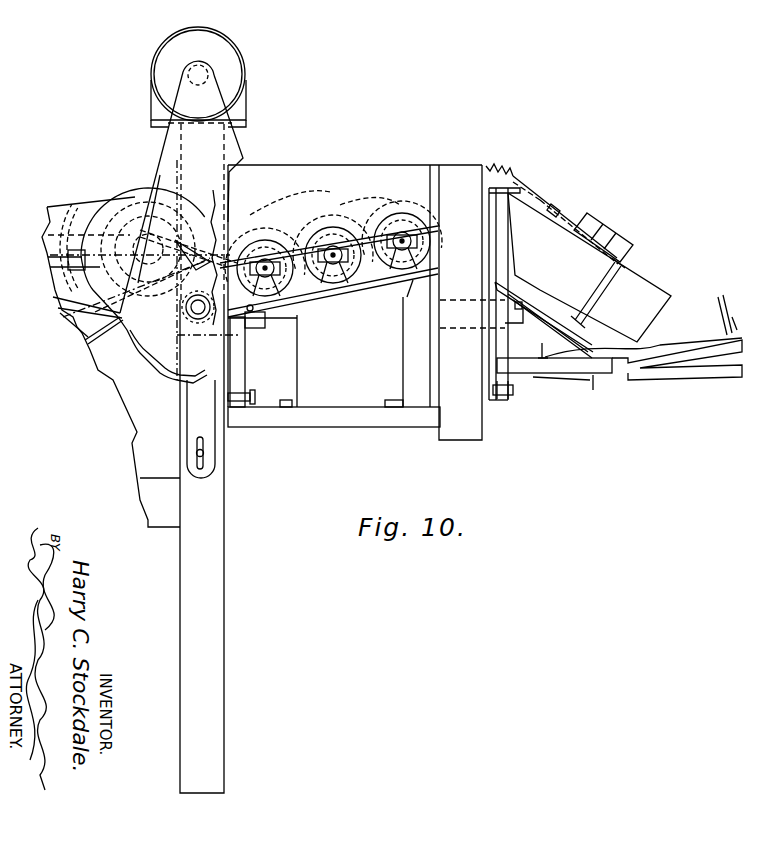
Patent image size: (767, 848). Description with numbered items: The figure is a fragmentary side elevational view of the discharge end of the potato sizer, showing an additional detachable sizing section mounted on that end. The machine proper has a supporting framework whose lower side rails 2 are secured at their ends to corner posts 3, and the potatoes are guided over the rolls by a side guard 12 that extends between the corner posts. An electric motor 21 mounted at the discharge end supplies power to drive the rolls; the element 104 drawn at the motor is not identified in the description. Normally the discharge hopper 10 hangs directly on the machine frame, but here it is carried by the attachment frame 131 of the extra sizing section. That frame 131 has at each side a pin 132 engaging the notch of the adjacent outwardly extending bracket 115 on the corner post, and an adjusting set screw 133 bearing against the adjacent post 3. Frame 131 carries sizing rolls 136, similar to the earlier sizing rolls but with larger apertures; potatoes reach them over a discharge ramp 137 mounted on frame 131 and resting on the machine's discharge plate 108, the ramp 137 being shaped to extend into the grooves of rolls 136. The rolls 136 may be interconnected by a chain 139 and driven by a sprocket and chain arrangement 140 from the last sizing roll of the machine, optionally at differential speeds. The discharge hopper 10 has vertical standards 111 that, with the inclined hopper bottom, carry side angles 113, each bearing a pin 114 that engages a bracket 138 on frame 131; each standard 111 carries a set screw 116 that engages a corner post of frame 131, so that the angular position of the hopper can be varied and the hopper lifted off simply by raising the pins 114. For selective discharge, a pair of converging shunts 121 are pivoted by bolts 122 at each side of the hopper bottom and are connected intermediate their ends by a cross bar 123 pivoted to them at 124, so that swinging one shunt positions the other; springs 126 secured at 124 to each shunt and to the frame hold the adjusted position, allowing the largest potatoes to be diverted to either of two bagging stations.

The lower side rails 2 is at (157, 523).
The corner posts 3 is at (214, 665).
The discharge chute 10 is at (646, 208).
The side guard 12 is at (70, 207).
The electric motor 21 is at (228, 52).
The hub 104 is at (208, 74).
The discharge plate 108 is at (203, 205).
The vertical standards 111 is at (500, 243).
The side angles 113 is at (588, 332).
The pin 114 is at (520, 290).
The brackets 115 is at (258, 335).
The set screw 116 is at (513, 392).
The converging shunts 121 is at (640, 280).
The bolts 122 is at (520, 186).
The cross bar 123 is at (630, 238).
The pivot 124 is at (624, 262).
The springs 126 is at (560, 207).
The frame 131 is at (352, 428).
The pin 132 is at (262, 316).
The adjusting set screw 133 is at (262, 398).
The sizing rolls 136 is at (395, 214).
The discharge ramp 137 is at (264, 235).
The bracket 138 is at (512, 326).
The chain 139 is at (365, 225).
The sprocket and chain arrangement 140 is at (225, 202).